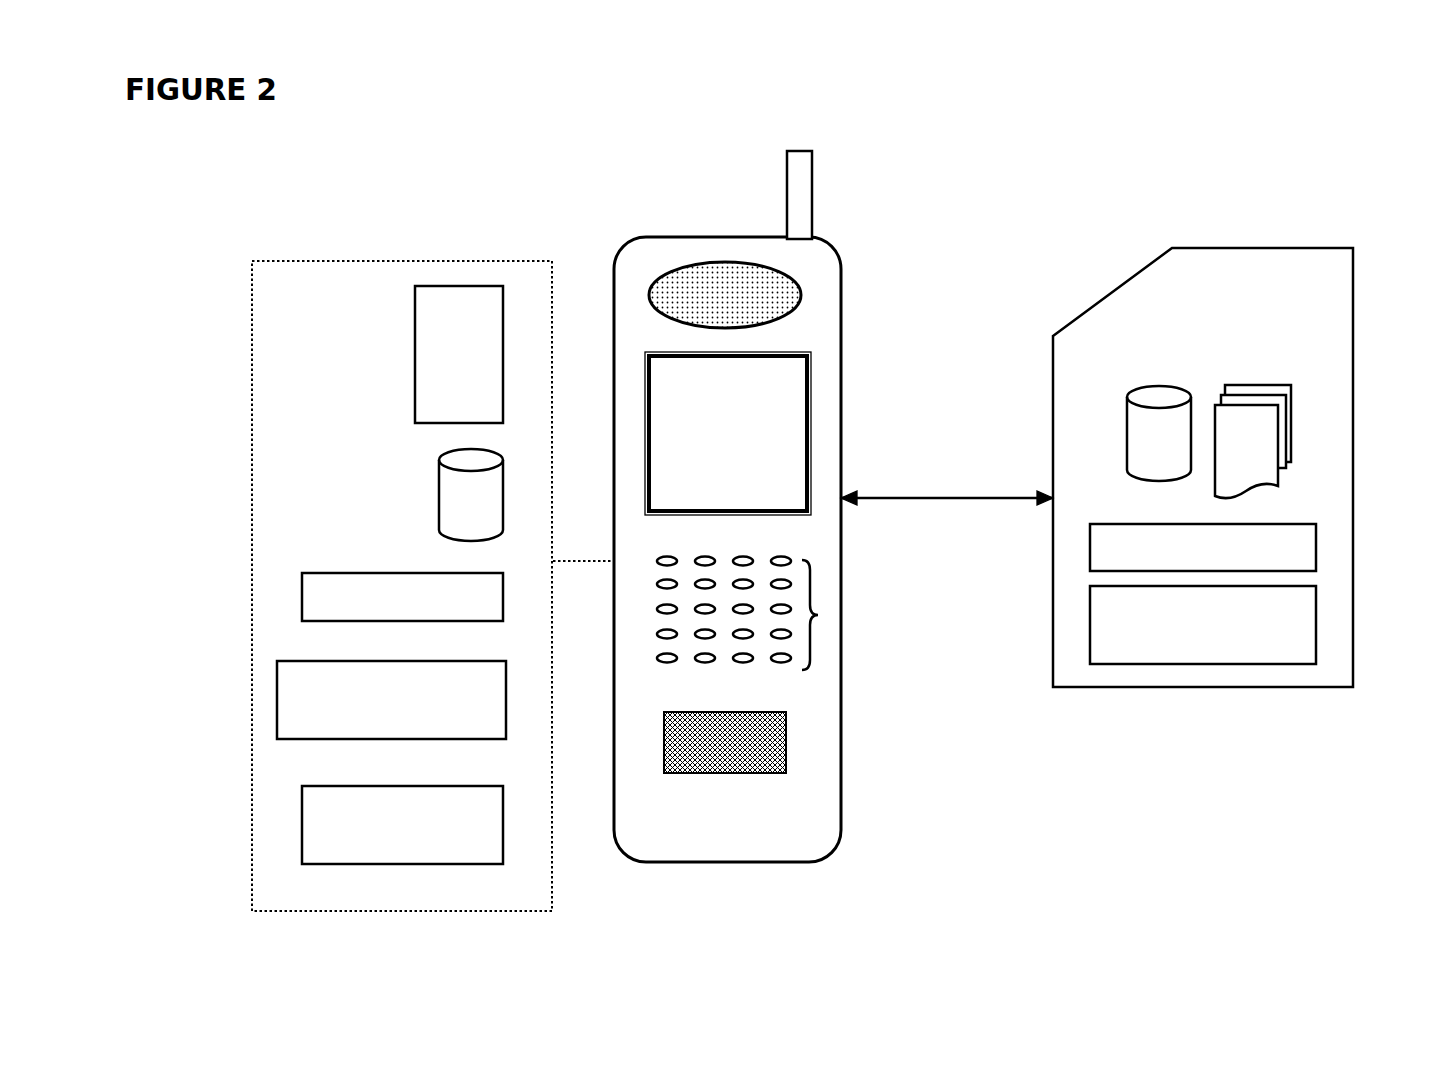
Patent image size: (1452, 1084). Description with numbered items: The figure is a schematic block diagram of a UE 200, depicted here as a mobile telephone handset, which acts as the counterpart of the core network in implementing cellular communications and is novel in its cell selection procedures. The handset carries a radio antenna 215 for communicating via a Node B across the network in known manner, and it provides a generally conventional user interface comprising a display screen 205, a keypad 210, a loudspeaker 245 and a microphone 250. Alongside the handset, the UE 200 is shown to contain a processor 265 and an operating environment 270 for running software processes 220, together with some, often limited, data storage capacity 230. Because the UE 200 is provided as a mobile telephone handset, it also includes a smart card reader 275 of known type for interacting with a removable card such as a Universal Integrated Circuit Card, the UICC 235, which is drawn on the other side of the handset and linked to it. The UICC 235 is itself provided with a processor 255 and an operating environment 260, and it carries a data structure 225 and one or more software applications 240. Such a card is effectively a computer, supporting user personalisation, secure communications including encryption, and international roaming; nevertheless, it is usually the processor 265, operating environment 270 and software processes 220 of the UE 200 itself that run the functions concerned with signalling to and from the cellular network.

The UE 200 is at (717, 228).
The display screen 205 is at (808, 371).
The keypad 210 is at (826, 612).
The radio antenna 215 is at (812, 188).
The software processes 220 is at (415, 318).
The data structure 225 is at (1140, 395).
The data storage capacity 230 is at (439, 463).
The Universal Integrated Circuit Card (UICC) 235 is at (1210, 688).
The software applications 240 is at (1290, 422).
The loudspeaker 245 is at (802, 296).
The microphone 250 is at (790, 738).
The processor 255 is at (1323, 551).
The operating environment 260 is at (1323, 632).
The processor 265 is at (302, 601).
The operating environment 270 is at (277, 680).
The smart card reader 275 is at (302, 815).